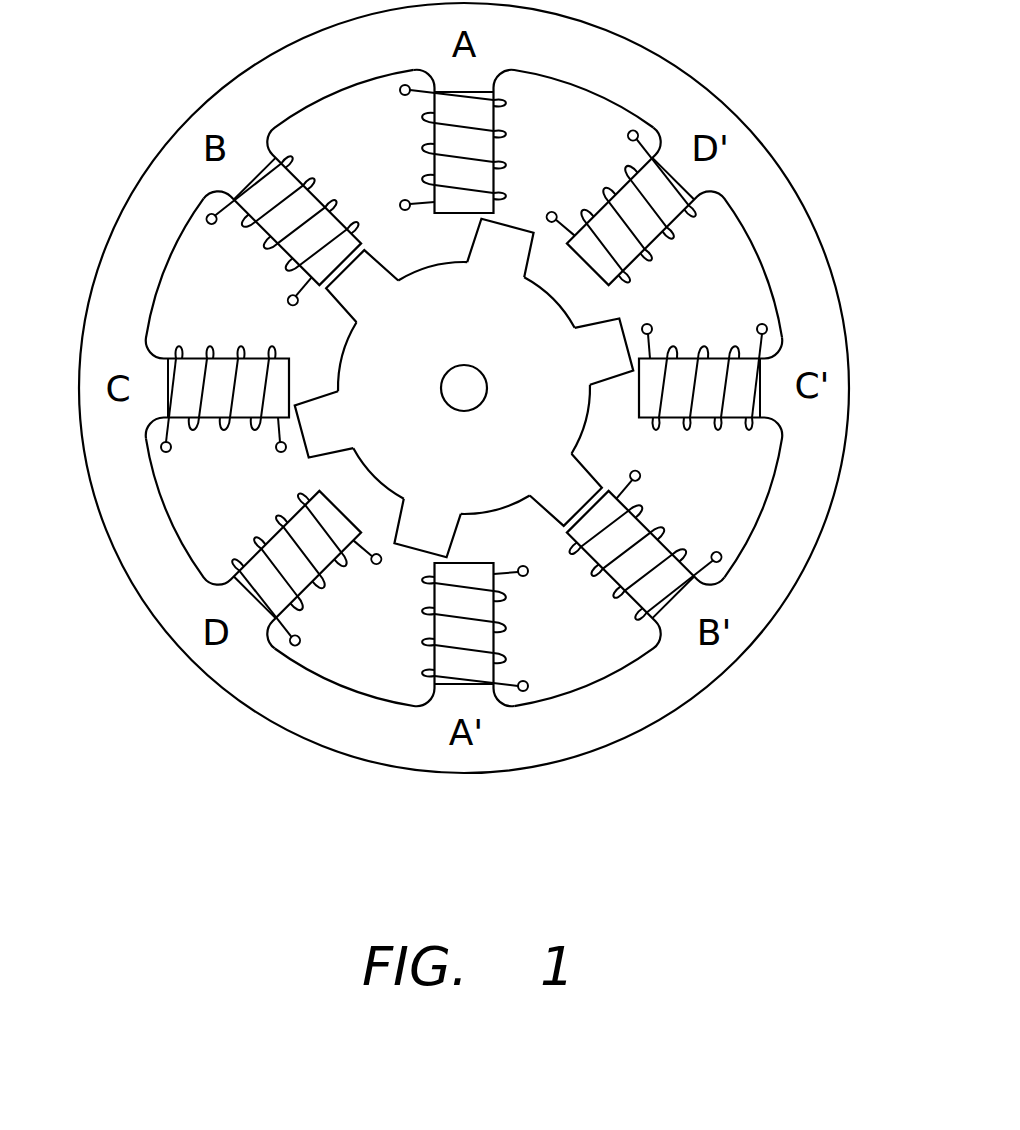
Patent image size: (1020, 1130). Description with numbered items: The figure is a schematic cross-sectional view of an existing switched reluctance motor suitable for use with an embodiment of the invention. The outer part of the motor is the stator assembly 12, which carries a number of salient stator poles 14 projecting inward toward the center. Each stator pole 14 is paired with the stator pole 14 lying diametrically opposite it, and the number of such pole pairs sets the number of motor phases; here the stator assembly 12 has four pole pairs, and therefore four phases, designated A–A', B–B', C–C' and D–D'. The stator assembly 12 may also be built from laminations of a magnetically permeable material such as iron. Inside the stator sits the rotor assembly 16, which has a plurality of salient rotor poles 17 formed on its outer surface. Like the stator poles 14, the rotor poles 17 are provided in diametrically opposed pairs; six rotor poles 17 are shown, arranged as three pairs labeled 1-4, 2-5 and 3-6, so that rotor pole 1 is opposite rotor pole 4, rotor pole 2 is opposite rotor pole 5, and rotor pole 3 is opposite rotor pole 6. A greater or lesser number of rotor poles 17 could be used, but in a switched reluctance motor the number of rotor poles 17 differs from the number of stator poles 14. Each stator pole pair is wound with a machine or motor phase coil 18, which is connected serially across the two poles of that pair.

The stator assembly 12 is at (795, 286).
The stator pole 14 is at (638, 397).
The rotor assembly 16 is at (380, 368).
The rotor pole 17 is at (200, 493).
The phase coil 18 is at (285, 628).
The rotor pole 1 is at (501, 247).
The rotor pole 2 is at (604, 350).
The rotor pole 3 is at (567, 491).
The rotor pole 4 is at (426, 528).
The rotor pole 5 is at (323, 425).
The rotor pole 6 is at (361, 285).